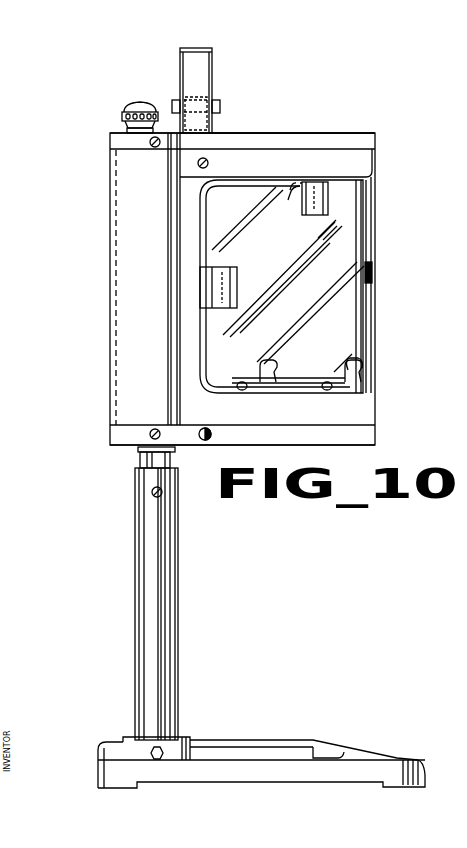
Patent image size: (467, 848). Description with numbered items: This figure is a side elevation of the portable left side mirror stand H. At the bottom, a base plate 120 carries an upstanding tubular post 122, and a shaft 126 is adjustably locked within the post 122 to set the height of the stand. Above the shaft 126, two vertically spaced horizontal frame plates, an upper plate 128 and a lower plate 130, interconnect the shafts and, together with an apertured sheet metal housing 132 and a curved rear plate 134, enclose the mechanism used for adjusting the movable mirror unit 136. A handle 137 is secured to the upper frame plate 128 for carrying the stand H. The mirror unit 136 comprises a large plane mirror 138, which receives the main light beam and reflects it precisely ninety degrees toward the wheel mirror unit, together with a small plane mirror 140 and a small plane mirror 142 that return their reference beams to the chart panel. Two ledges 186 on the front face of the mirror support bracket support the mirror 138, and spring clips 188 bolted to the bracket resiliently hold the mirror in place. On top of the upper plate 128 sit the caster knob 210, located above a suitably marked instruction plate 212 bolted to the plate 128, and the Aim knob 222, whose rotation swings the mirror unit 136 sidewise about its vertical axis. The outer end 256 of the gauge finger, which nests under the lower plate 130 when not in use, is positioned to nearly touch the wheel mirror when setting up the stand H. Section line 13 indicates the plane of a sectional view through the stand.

The base plate 120 is at (235, 752).
The tubular post 122 is at (165, 538).
The shaft 126 is at (155, 458).
The upper frame plate 128 is at (375, 140).
The lower frame plate 130 is at (372, 432).
The sheet metal housing 132 is at (297, 173).
The curved rear plate 134 is at (125, 219).
The mirror unit 136 is at (340, 244).
The handle 137 is at (213, 56).
The large plane mirror 138 is at (348, 253).
The small plane mirror 140 is at (328, 203).
The small plane mirror 142 is at (237, 268).
The ledges 186 is at (342, 373).
The spring clips 188 is at (292, 190).
The caster knob 210 is at (222, 104).
The instruction plate 212 is at (242, 133).
The Aim knob 222 is at (157, 90).
The outer end of gauge finger 256 is at (210, 431).
The section line 13- 13 is at (101, 133).
The mirror stand H is at (316, 134).